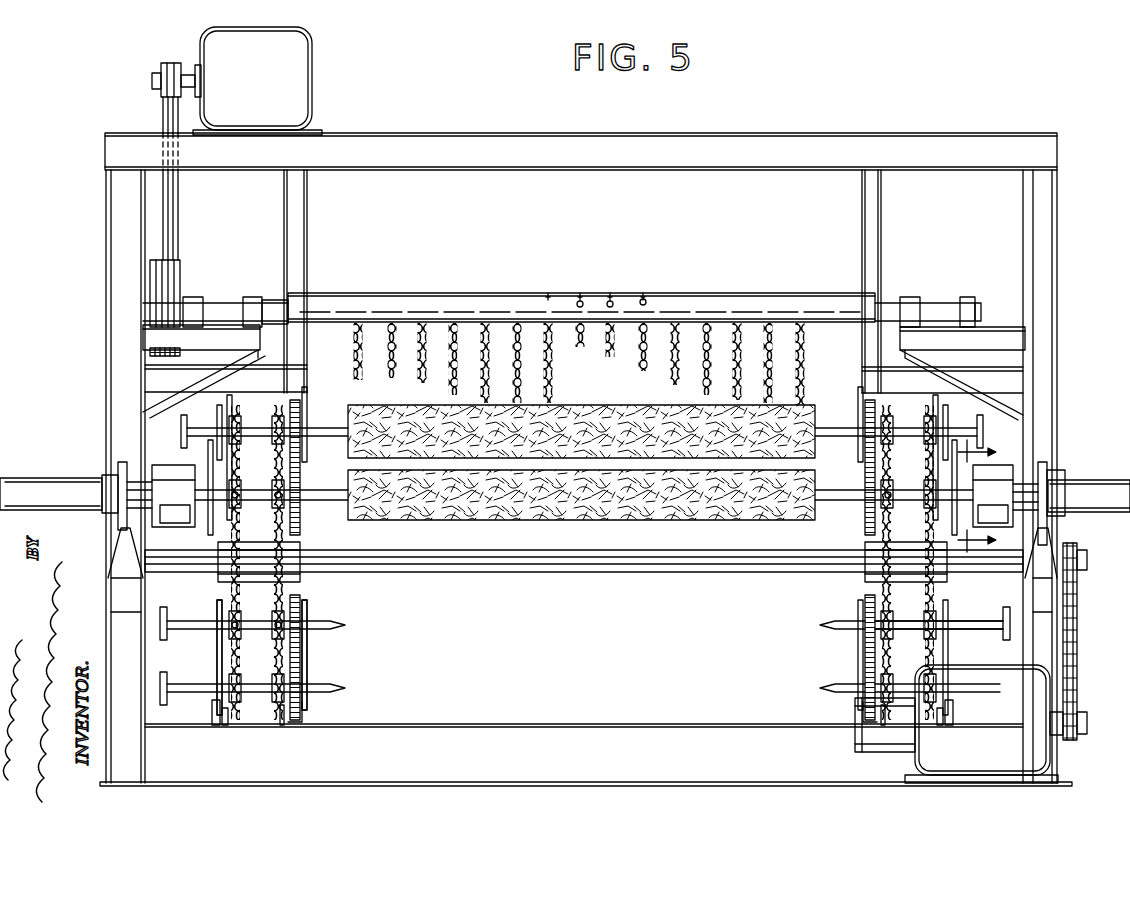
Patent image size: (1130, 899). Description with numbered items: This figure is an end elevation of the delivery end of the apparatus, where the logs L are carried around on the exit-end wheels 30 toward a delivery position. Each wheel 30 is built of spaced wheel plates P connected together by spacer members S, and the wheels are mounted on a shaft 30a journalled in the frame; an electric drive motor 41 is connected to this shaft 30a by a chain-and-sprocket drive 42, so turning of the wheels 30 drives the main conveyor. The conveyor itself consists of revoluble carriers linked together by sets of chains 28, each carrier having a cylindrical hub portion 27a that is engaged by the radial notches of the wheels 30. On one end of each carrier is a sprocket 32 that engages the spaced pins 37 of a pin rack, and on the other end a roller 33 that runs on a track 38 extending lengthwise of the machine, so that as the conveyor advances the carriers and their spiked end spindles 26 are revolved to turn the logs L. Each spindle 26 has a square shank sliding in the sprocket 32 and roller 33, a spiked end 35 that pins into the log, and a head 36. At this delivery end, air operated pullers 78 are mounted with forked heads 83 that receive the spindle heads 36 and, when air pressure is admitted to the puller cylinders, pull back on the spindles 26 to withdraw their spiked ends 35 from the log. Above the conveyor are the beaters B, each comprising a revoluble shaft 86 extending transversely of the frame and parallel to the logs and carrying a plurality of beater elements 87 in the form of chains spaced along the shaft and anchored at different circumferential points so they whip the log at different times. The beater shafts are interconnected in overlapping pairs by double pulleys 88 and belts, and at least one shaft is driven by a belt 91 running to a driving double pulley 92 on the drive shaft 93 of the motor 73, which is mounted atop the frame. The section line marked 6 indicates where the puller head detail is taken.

The motor 73 is at (292, 48).
The driving double pulley 92 is at (163, 68).
The drive shaft 93 is at (154, 84).
The belt 91 is at (167, 214).
The double pulley 88 is at (148, 273).
The revoluble shaft 86 is at (720, 306).
The beater elements 87 is at (388, 372).
The spiked end spindles 26 is at (325, 436).
The head 36 is at (181, 433).
The forked head 83 is at (172, 468).
The air operated pullers 78 is at (33, 489).
The chains 28 is at (283, 531).
The sprocket 32 is at (290, 409).
The roller 33 is at (222, 416).
The wheels 30 is at (228, 533).
The shaft 30a is at (603, 563).
The spiked end 35 is at (335, 688).
The pins 37 is at (285, 718).
The track 38 is at (219, 718).
The hub portion 27a is at (908, 626).
The electric drive motor 41 is at (990, 750).
The chain-and-sprocket drive 42 is at (1066, 683).
The section line 6 is at (986, 507).
The beaters B is at (511, 297).
The logs L is at (350, 482).
The spacer members S is at (255, 483).
The wheel plates P is at (229, 588).